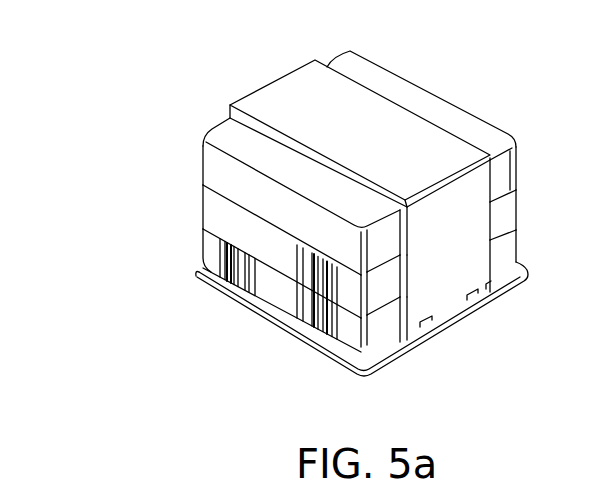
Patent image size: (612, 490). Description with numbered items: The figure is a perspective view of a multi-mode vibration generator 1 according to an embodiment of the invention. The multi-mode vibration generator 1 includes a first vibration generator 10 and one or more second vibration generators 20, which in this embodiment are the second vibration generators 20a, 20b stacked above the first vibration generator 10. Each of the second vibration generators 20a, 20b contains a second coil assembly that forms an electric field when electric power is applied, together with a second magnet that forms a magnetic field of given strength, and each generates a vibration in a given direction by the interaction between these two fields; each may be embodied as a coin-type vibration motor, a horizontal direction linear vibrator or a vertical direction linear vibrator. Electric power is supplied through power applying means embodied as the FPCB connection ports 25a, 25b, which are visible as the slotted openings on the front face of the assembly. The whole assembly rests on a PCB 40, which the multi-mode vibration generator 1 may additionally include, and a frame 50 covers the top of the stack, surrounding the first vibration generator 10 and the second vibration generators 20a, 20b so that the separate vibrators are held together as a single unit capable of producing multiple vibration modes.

The multi-mode vibration generator 1 is at (308, 225).
The first vibration generator 10 is at (306, 332).
The second vibration generator 20 is at (273, 218).
The second vibration generator 20a is at (212, 208).
The second vibration generator 20b is at (212, 168).
The FPCB connection port 25a is at (230, 286).
The FPCB connection port 25b is at (315, 313).
The PCB 40 is at (519, 281).
The frame 50 is at (283, 93).